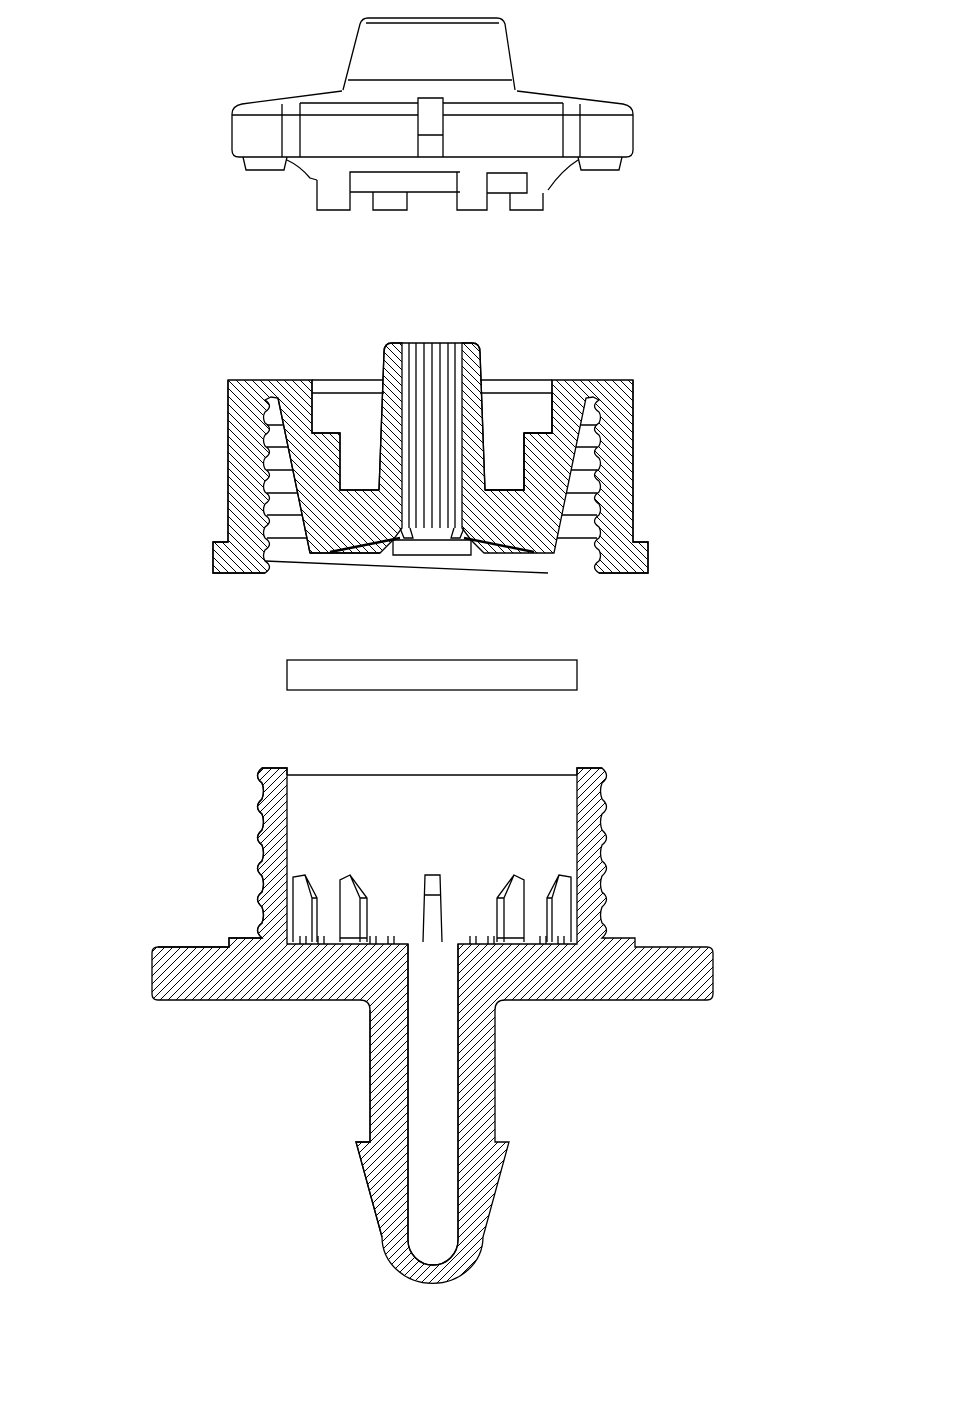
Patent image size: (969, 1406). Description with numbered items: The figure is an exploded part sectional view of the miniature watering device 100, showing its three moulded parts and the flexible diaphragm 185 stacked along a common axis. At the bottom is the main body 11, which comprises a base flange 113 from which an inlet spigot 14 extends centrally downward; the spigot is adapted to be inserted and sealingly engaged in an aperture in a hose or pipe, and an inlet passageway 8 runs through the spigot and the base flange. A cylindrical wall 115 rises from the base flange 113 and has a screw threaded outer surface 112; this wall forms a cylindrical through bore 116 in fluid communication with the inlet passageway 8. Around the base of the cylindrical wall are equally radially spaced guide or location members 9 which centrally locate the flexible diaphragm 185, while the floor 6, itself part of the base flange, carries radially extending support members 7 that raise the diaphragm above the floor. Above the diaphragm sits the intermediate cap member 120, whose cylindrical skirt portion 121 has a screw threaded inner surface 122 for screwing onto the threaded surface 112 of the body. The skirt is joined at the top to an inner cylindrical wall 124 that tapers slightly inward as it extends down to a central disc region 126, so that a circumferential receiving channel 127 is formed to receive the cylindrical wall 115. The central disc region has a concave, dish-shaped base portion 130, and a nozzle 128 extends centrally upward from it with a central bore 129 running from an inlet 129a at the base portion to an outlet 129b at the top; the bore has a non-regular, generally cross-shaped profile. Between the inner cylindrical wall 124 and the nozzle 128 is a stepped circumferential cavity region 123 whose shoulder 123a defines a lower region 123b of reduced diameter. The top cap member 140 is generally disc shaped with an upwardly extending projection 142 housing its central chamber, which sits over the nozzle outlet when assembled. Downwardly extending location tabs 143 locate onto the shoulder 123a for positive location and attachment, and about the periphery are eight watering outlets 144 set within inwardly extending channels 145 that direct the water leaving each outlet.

The miniature watering device 100 is at (170, 92).
The top cap member 140 is at (512, 40).
The upwardly extending projection 142 is at (350, 58).
The watering outlets 144 is at (432, 148).
The inwardly extending channels 145 is at (288, 128).
The location tabs 143 is at (322, 192).
The intermediate cap member 120 is at (226, 460).
The skirt portion 121 is at (243, 512).
The screw threaded inner surface 122 is at (594, 550).
The stepped circumferential cavity region 123 is at (503, 462).
The shoulder 123a is at (538, 431).
The lower region of reduced diameter 123b is at (512, 473).
The inner cylindrical wall 124 is at (300, 437).
The central disc region 126 is at (338, 522).
The circumferential receiving channel 127 is at (282, 524).
The nozzle 128 is at (380, 363).
The central bore 129 is at (422, 342).
The inlet of central bore 129a is at (412, 540).
The outlet of nozzle 129b is at (450, 343).
The base portion 130 is at (437, 548).
The flexible diaphragm 185 is at (578, 678).
The main body 11 is at (149, 973).
The cylindrical through bore 116 is at (504, 804).
The cylindrical wall 115 is at (264, 781).
The screw threaded outer surface 112 is at (258, 822).
The base flange 113 is at (216, 944).
The guide or location members 9 is at (347, 896).
The support members 7 is at (476, 940).
The floor 6 is at (347, 944).
The inlet spigot 14 is at (370, 1076).
The inlet passageway 8 is at (447, 1061).